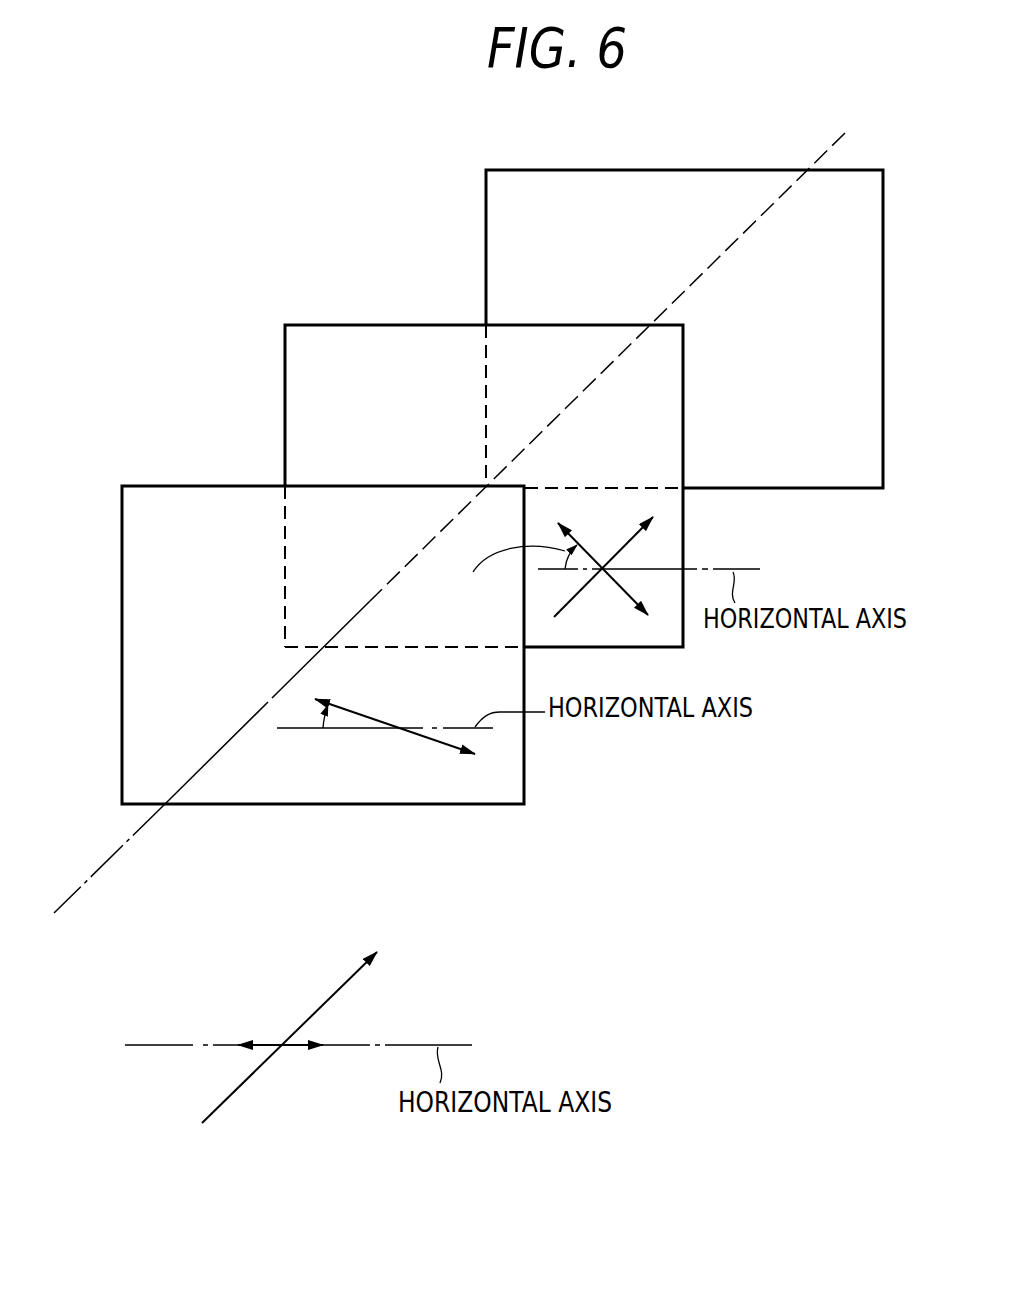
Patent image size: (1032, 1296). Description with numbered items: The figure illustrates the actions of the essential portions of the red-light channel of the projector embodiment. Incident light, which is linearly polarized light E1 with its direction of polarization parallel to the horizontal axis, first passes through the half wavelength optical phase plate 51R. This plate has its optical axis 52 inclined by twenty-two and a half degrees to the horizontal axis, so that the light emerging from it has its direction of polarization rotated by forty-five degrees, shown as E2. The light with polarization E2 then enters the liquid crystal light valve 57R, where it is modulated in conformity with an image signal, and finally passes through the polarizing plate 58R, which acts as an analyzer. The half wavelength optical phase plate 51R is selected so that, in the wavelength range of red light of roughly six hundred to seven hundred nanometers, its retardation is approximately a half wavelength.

The half wavelength optical phase plate 51R is at (143, 688).
The optical axis 52 is at (350, 713).
The liquid crystal light valve 57R is at (299, 418).
The polarizing plate 58R is at (493, 257).
The linearly polarized light E1 is at (292, 1047).
The rotated direction of polarization E2 is at (613, 585).